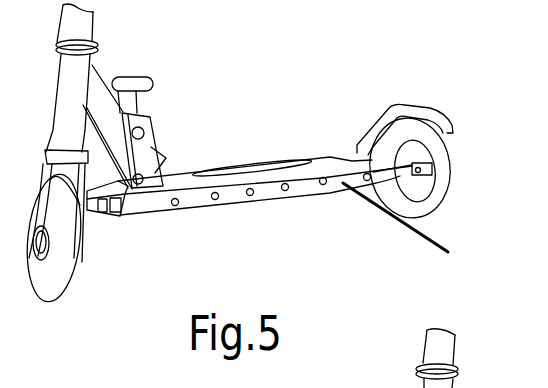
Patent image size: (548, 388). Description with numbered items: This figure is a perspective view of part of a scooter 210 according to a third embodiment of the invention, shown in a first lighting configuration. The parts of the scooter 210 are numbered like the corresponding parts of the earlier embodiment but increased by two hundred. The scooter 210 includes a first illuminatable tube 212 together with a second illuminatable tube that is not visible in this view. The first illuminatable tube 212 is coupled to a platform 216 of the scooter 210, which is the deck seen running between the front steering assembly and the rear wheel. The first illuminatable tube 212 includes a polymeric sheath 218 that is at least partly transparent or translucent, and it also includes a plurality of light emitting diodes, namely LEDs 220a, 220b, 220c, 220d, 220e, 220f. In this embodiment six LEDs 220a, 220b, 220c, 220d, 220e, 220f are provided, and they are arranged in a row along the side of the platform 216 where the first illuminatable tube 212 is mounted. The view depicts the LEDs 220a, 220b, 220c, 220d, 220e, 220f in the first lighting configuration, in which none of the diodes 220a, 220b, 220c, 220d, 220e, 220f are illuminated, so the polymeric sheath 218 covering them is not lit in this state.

The scooter 210 is at (258, 97).
The first illuminatable tube 212 is at (148, 214).
The platform 216 is at (297, 158).
The polymeric sheath 218 is at (416, 228).
The light emitting diode 220a is at (175, 206).
The light emitting diode 220b is at (217, 200).
The light emitting diode 220c is at (256, 196).
The light emitting diode 220d is at (287, 191).
The light emitting diode 220e is at (326, 185).
The light emitting diode 220f is at (369, 180).